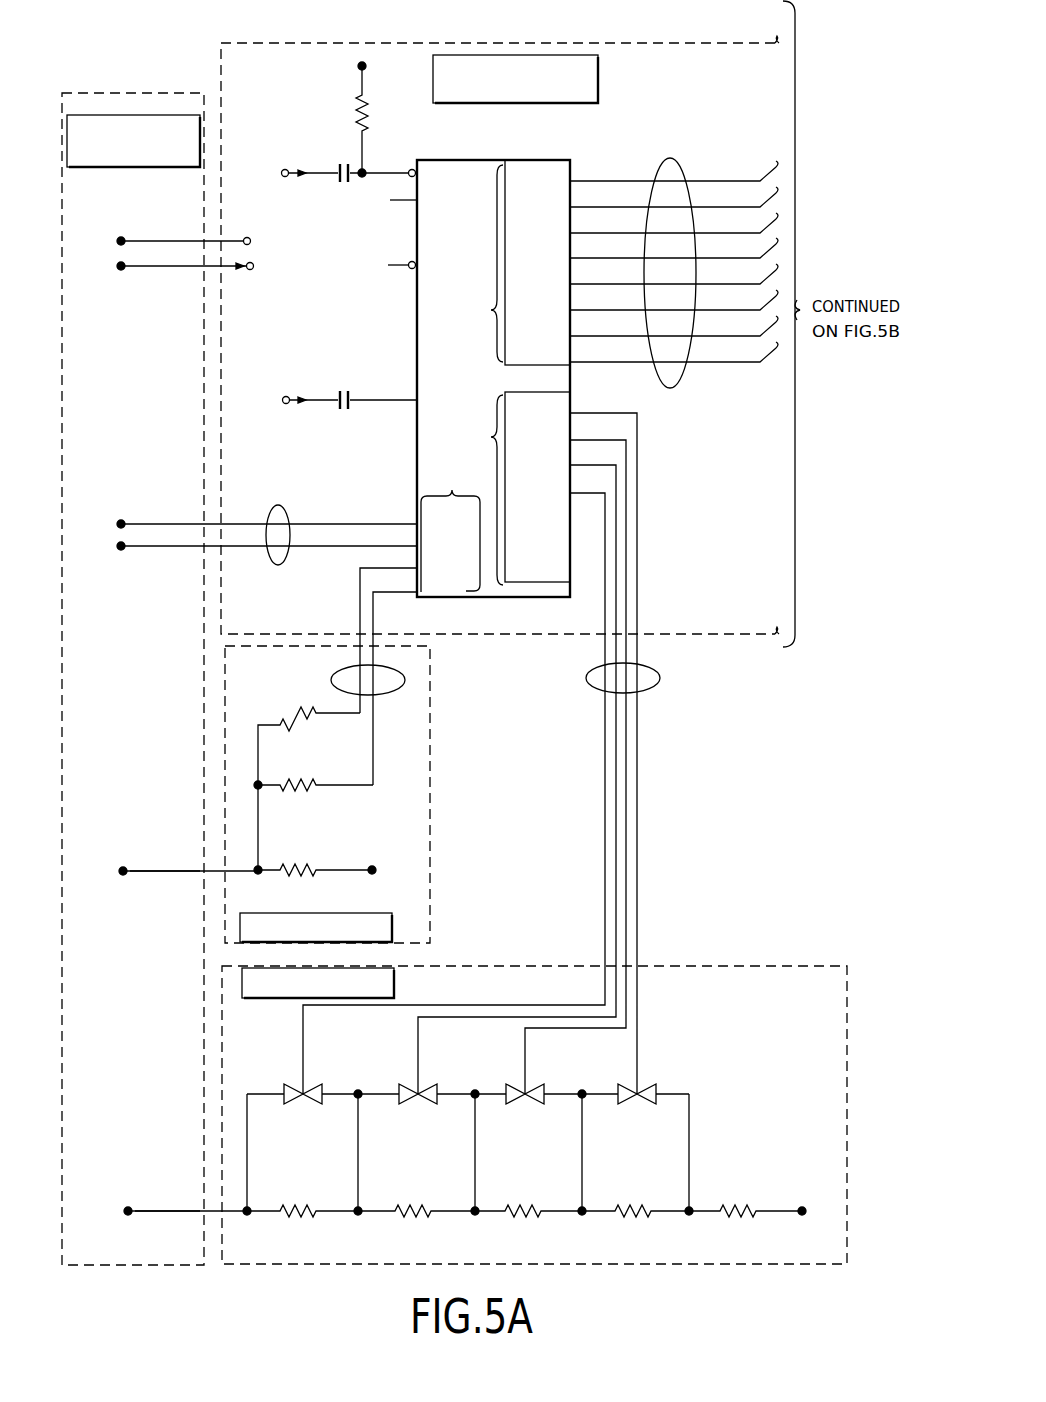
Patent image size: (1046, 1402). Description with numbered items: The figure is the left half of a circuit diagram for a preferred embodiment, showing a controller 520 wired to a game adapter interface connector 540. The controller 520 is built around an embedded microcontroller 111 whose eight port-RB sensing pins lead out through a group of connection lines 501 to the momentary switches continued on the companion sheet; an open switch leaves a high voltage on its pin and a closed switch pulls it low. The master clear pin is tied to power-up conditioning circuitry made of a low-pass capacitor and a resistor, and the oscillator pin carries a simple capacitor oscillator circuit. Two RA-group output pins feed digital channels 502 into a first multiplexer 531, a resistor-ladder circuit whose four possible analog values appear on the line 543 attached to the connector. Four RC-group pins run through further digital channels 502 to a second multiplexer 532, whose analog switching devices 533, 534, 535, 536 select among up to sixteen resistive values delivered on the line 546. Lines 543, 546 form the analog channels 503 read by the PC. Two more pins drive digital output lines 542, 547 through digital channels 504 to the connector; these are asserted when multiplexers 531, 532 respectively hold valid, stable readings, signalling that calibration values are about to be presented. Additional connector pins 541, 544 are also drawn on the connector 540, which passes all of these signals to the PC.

The game adapter interface connector 540 is at (140, 93).
The connector pin #1 (+5V) 541 is at (188, 227).
The connector pin #4 (ground) 544 is at (183, 285).
The digital output line 542 is at (254, 509).
The digital output line 547 is at (254, 569).
The analog line 543 is at (176, 860).
The analog line 546 is at (169, 1200).
The analog channels 503 is at (149, 872).
The digital channels 504 is at (276, 563).
The controller 520 is at (518, 43).
The microcontroller integrated circuit 111 is at (491, 383).
The connection lines 501 is at (668, 160).
The digital channels 502 is at (590, 686).
The first multiplexer 531 is at (430, 808).
The second multiplexer 532 is at (523, 963).
The analog switching device 533 is at (318, 1084).
The analog switching device 534 is at (432, 1084).
The analog switching device 535 is at (538, 1084).
The analog switching device 536 is at (652, 1084).